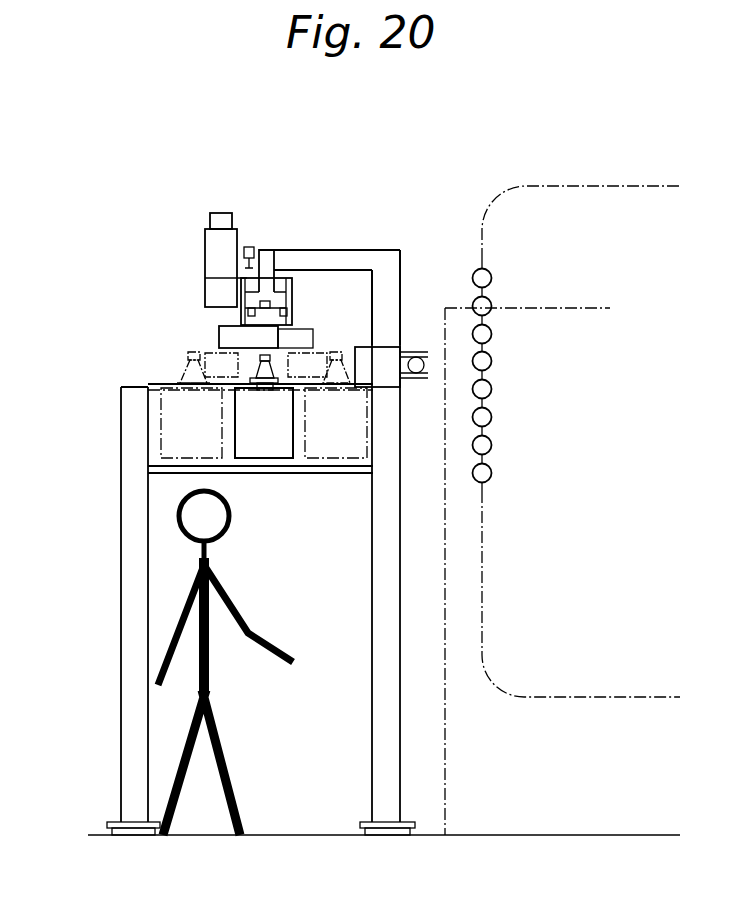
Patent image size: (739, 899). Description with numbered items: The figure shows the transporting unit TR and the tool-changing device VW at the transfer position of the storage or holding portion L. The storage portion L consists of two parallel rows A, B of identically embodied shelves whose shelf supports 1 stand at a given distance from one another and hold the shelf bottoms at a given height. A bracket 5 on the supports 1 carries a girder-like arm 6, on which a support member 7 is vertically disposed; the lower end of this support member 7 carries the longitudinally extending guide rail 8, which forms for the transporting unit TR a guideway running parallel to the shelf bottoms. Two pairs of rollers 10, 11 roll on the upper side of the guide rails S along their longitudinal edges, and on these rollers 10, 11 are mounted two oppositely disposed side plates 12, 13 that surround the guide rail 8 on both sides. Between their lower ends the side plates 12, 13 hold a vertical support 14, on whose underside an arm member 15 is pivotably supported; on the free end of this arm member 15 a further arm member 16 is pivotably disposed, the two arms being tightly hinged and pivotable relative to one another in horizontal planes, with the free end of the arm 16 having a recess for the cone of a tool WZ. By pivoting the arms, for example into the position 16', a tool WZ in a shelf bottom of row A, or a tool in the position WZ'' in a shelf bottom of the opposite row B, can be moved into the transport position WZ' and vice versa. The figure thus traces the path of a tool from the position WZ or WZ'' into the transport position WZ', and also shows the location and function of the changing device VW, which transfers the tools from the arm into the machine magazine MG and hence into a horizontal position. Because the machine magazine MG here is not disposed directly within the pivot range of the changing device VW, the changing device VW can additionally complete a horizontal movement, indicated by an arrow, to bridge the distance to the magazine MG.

The shelf supports 1 is at (125, 513).
The bracket 5 is at (379, 284).
The girder-like arm 6 is at (325, 250).
The support member 7 is at (258, 247).
The guide rail 8 is at (268, 290).
The rollers 10 is at (199, 275).
The rollers 11 is at (285, 275).
The side plate 12 is at (232, 306).
The side plate 13 is at (262, 311).
The vertical support 14 is at (270, 326).
The arm member 15 is at (229, 329).
The arm member 16 is at (189, 368).
The pivoted position of arm member 16' is at (364, 390).
The transporting unit TR is at (132, 301).
The storage or holding portion L is at (108, 398).
The tool position WZ'' is at (129, 423).
The tool position WZ' is at (264, 466).
The tool WZ is at (336, 460).
The guide rails S is at (302, 592).
The shelf row B is at (120, 612).
The shelf row A is at (376, 638).
The transfer line J is at (452, 355).
The machine magazine MG is at (492, 325).
The tool-changing device VW is at (427, 377).